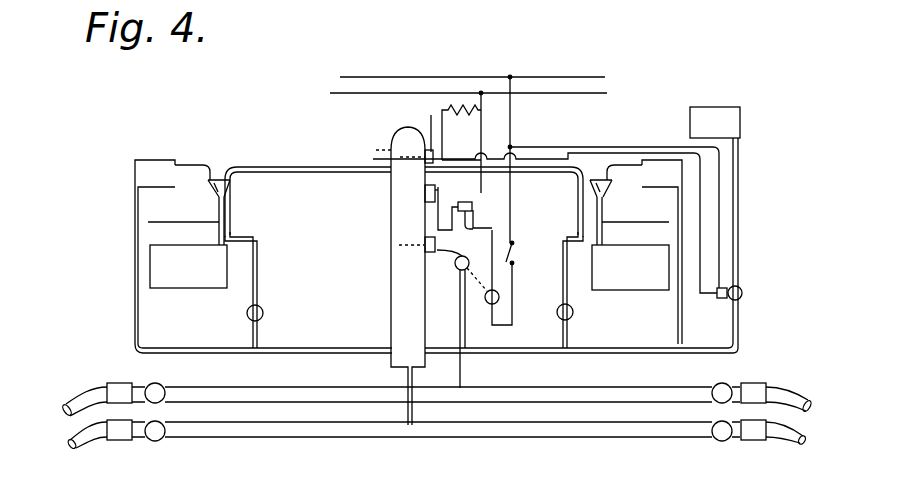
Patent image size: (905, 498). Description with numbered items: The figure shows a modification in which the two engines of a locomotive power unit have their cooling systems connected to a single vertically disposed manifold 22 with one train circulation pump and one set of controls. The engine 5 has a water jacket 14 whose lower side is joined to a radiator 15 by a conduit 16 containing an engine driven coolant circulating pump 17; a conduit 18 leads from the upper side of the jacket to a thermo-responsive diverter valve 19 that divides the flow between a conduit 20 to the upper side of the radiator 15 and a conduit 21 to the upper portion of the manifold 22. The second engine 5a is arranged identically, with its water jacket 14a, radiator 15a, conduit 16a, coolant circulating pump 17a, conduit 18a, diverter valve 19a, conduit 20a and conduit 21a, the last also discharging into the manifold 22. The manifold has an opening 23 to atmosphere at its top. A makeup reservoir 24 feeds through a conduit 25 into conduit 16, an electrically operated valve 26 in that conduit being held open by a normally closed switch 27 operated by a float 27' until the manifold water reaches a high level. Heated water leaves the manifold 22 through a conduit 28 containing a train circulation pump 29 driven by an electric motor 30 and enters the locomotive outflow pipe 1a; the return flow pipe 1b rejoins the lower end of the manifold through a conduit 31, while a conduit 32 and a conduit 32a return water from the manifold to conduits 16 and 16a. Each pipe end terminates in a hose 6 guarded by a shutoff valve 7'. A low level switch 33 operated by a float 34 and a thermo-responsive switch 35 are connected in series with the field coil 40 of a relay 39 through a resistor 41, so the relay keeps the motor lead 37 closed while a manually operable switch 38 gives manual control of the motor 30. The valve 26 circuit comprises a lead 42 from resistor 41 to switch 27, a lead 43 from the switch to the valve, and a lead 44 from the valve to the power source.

The outflow pipe 1a is at (591, 387).
The return flow pipe 1b is at (598, 438).
The internal combustion engine 5 is at (652, 286).
The internal combustion engine 5a is at (198, 289).
The hose 6 is at (76, 398).
The shutoff valve 7' is at (436, 417).
The water jacket 14 is at (637, 240).
The water jacket 14a is at (222, 231).
The radiator 15 is at (662, 183).
The radiator 15a is at (152, 163).
The conduit 16 is at (571, 331).
The conduit 16a is at (260, 264).
The coolant circulating pump 17 is at (558, 312).
The coolant circulating pump 17a is at (263, 311).
The conduit 18 is at (592, 208).
The conduit 18a is at (212, 210).
The thermo-responsive diverter valve 19 is at (605, 200).
The thermo-responsive diverter valve 19a is at (232, 194).
The conduit 20 is at (620, 168).
The conduit 20a is at (213, 165).
The conduit 21 is at (553, 174).
The conduit 21a is at (236, 178).
The manifold 22 is at (402, 322).
The opening 23 is at (404, 128).
The makeup reservoir 24 is at (742, 125).
The conduit 25 is at (740, 172).
The electrically operated valve 26 is at (743, 292).
The switch 27 is at (417, 125).
The float 27' is at (388, 152).
The conduit 28 is at (460, 256).
The train circulation pump 29 is at (456, 266).
The electric motor 30 is at (500, 306).
The conduit 31 is at (414, 412).
The conduit 32 is at (535, 350).
The conduit 32a is at (302, 351).
The low level switch 33 is at (425, 186).
The float 34 is at (425, 197).
The thermo-responsive switch 35 is at (427, 258).
The lead 37 is at (493, 240).
The manually operable switch 38 is at (517, 263).
The relay 39 is at (464, 202).
The field coil 40 is at (458, 210).
The resistor 41 is at (462, 106).
The lead 42 is at (443, 143).
The lead 43 is at (586, 152).
The lead 44 is at (637, 146).